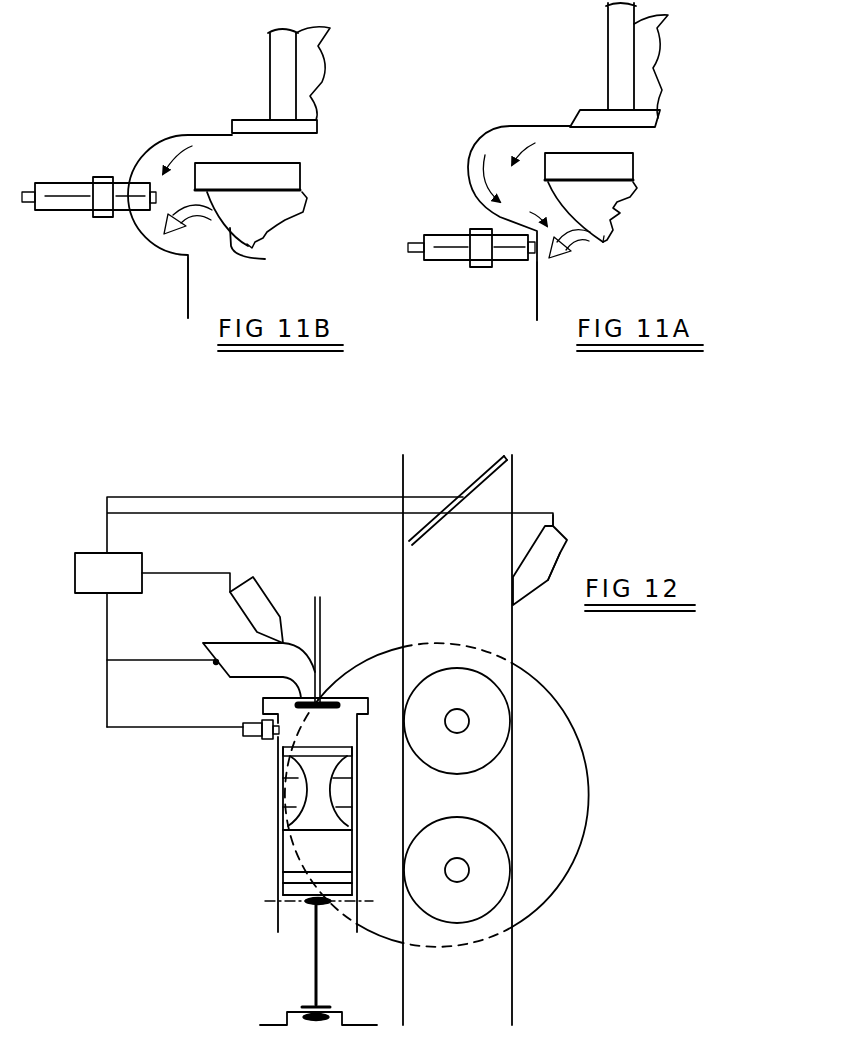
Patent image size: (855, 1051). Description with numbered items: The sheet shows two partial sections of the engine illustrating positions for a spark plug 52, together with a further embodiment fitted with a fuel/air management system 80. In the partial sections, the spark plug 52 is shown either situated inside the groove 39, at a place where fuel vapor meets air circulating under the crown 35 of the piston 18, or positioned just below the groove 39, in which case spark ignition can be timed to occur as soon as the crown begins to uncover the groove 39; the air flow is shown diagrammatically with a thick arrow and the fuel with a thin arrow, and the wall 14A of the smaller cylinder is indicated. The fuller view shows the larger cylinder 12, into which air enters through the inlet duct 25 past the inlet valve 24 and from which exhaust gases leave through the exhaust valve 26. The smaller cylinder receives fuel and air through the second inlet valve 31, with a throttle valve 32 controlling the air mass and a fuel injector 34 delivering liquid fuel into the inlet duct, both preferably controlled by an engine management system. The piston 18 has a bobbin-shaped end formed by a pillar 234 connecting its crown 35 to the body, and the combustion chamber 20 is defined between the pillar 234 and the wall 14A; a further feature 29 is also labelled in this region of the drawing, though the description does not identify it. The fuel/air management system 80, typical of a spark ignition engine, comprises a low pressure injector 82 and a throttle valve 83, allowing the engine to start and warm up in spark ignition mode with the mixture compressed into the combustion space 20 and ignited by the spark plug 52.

In FIG. 12, the larger cylinder 12 is at (551, 748).
In FIG. 11B, the wall of the smaller cylinder 14A is at (187, 302).
In FIG. 11A, the wall of the smaller cylinder 14A is at (537, 310).
In FIG. 11B, the piston 18 is at (282, 212).
In FIG. 11A, the piston 18 is at (614, 203).
In FIG. 11B, the combustion chamber 20 is at (266, 253).
In FIG. 11A, the combustion chamber 20 is at (602, 234).
In FIG. 12, the combustion chamber 20 is at (285, 767).
In FIG. 12, the inlet valve 24 is at (490, 708).
In FIG. 12, the inlet duct 25 is at (432, 583).
In FIG. 12, the exhaust valve 26 is at (500, 868).
In FIG. 12, the piston bowl 29 is at (285, 797).
In FIG. 11B, the second inlet valve 31 is at (277, 58).
In FIG. 11A, the second inlet valve 31 is at (618, 42).
In FIG. 12, the second inlet valve 31 is at (322, 602).
In FIG. 12, the throttle valve 32 is at (215, 661).
In FIG. 12, the fuel injector 34 is at (253, 590).
In FIG. 11B, the crown of the piston 35 is at (222, 172).
In FIG. 11A, the crown of the piston 35 is at (563, 165).
In FIG. 12, the crown of the piston 35 is at (333, 765).
In FIG. 11B, the groove 39 is at (157, 158).
In FIG. 11A, the groove 39 is at (472, 163).
In FIG. 11B, the spark plug 52 is at (76, 196).
In FIG. 11A, the spark plug 52 is at (450, 248).
In FIG. 12, the spark plug 52 is at (245, 726).
In FIG. 12, the fuel/air management system 80 is at (538, 495).
In FIG. 12, the low pressure injector 82 is at (552, 552).
In FIG. 12, the throttle valve 83 is at (490, 468).
In FIG. 12, the pillar 234 is at (302, 823).